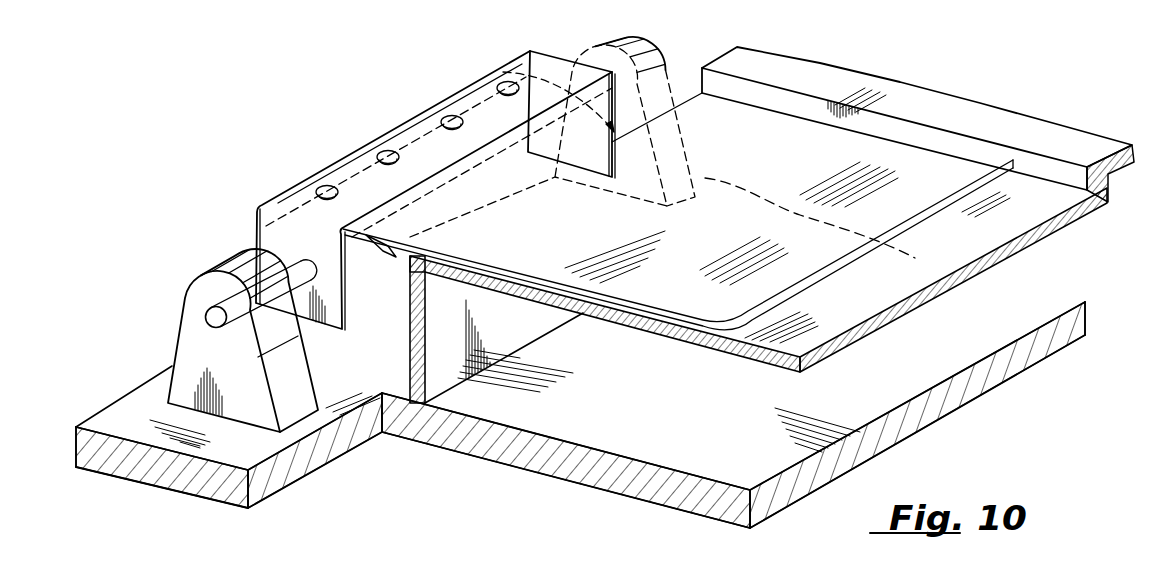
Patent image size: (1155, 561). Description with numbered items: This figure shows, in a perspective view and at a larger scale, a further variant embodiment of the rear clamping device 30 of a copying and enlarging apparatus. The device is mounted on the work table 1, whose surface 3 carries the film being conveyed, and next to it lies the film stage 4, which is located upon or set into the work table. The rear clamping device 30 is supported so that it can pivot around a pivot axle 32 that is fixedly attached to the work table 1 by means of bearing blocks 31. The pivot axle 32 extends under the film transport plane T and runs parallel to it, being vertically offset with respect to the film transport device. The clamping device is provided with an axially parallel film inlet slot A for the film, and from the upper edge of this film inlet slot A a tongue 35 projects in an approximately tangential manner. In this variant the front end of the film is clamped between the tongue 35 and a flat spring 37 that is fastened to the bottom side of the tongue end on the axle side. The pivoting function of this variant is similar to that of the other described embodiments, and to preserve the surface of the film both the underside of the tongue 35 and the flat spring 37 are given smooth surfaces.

The work table 1 is at (118, 413).
The surface of the work table 3 is at (142, 398).
The bearing blocks 31 is at (188, 333).
The pivot axle 32 is at (287, 268).
The rear clamping device 30 is at (386, 108).
The flat spring 37 is at (388, 247).
The film inlet slot A is at (404, 258).
The film transport plane T is at (848, 311).
The tongue 35 is at (770, 137).
The film stage 4 is at (984, 112).